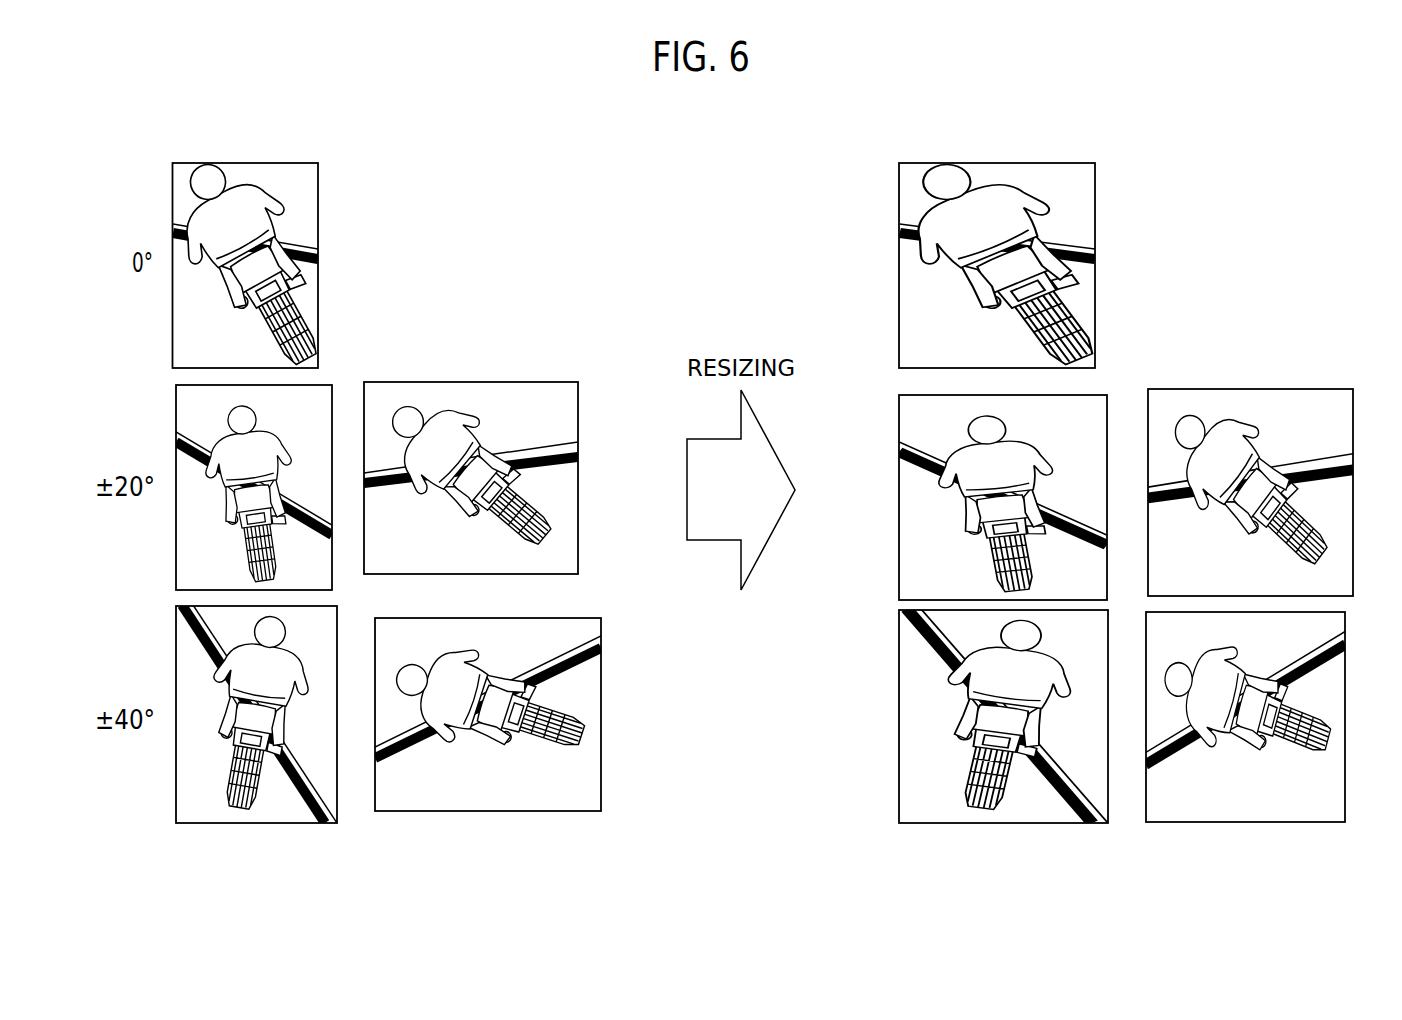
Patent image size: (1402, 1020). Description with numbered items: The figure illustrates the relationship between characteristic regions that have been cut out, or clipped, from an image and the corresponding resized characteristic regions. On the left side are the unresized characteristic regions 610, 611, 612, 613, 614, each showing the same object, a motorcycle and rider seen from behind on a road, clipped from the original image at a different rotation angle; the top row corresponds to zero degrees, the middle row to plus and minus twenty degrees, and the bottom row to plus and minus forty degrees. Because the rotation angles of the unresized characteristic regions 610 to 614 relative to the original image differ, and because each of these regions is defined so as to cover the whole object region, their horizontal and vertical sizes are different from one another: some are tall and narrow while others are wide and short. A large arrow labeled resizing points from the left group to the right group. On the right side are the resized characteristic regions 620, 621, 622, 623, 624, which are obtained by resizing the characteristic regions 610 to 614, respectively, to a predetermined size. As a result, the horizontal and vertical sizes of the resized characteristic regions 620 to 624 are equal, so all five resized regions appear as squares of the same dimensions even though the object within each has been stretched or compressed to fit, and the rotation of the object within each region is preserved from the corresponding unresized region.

The characteristic region 610 is at (318, 213).
The characteristic region 611 is at (332, 402).
The characteristic region 612 is at (578, 400).
The characteristic region 613 is at (280, 824).
The characteristic region 614 is at (537, 812).
The resized characteristic region 620 is at (1095, 215).
The resized characteristic region 621 is at (1108, 410).
The resized characteristic region 622 is at (1353, 408).
The resized characteristic region 623 is at (1033, 825).
The resized characteristic region 624 is at (1288, 824).